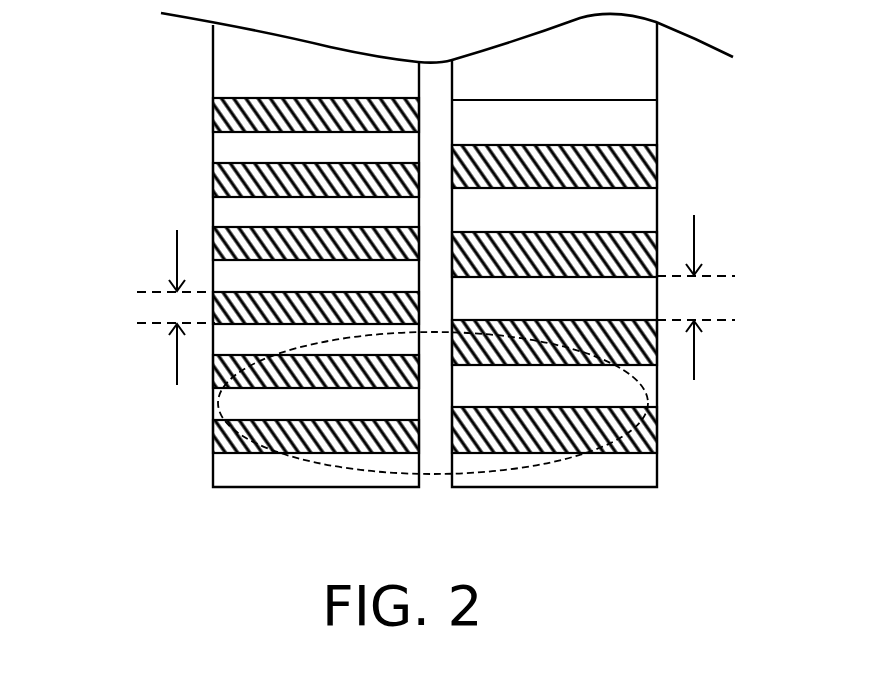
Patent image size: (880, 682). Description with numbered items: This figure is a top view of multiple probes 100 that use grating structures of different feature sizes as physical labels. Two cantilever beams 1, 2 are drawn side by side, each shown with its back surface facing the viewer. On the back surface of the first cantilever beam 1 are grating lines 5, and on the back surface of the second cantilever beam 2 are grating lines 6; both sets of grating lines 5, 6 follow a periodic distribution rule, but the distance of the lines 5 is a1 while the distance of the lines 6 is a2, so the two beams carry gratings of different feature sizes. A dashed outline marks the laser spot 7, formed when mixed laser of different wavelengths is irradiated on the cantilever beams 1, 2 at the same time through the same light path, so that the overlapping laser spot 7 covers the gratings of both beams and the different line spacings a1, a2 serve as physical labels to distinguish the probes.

The multiple probes 100 is at (398, 271).
The cantilever beam 1 is at (264, 256).
The cantilever beam 2 is at (602, 254).
The grating lines 5 is at (213, 181).
The grating lines 6 is at (657, 172).
The laser spot 7 is at (636, 432).
The distance of the lines a1 is at (153, 307).
The distance of the lines a2 is at (714, 297).